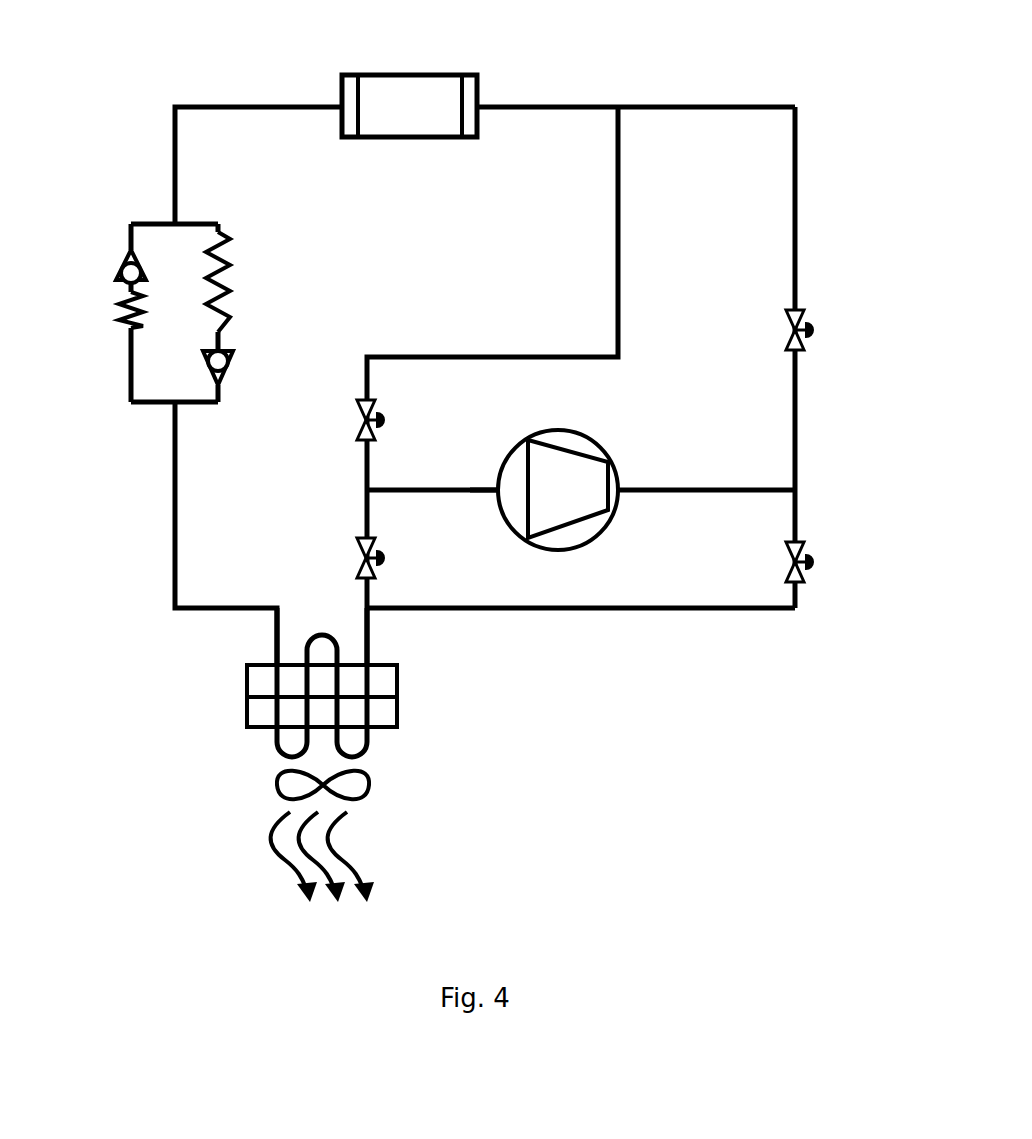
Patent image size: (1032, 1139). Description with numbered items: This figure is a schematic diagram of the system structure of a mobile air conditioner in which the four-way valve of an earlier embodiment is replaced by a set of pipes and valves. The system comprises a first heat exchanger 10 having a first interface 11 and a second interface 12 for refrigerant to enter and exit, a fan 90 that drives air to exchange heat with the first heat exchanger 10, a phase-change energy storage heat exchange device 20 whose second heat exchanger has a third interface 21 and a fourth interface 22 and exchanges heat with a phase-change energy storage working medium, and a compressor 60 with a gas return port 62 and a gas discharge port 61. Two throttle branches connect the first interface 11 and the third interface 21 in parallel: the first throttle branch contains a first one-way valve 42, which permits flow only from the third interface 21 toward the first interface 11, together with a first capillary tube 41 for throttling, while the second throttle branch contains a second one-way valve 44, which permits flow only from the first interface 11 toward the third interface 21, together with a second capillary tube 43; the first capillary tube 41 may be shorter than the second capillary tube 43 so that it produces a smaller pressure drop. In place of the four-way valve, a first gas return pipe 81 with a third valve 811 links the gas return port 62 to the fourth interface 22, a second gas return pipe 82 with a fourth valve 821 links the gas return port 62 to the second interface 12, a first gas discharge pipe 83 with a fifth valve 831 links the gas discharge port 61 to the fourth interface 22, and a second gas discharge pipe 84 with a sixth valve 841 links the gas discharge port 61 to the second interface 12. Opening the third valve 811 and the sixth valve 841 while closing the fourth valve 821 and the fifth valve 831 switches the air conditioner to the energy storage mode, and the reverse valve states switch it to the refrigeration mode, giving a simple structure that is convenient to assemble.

The first heat exchanger 10 is at (397, 730).
The first interface 11 is at (276, 662).
The second interface 12 is at (369, 662).
The phase-change energy storage heat exchange device 20 is at (478, 84).
The third interface 21 is at (341, 103).
The fourth interface 22 is at (478, 110).
The first capillary tube 41 is at (121, 313).
The first one-way valve 42 is at (118, 270).
The second capillary tube 43 is at (224, 273).
The second one-way valve 44 is at (230, 374).
The compressor 60 is at (610, 524).
The gas discharge port 61 is at (620, 480).
The gas return port 62 is at (497, 487).
The first gas return pipe 81 is at (365, 376).
The third valve 811 is at (387, 417).
The second gas return pipe 82 is at (365, 518).
The fourth valve 821 is at (387, 558).
The first gas discharge pipe 83 is at (799, 228).
The fifth valve 831 is at (816, 328).
The second gas discharge pipe 84 is at (798, 518).
The sixth valve 841 is at (815, 557).
The fan 90 is at (367, 797).